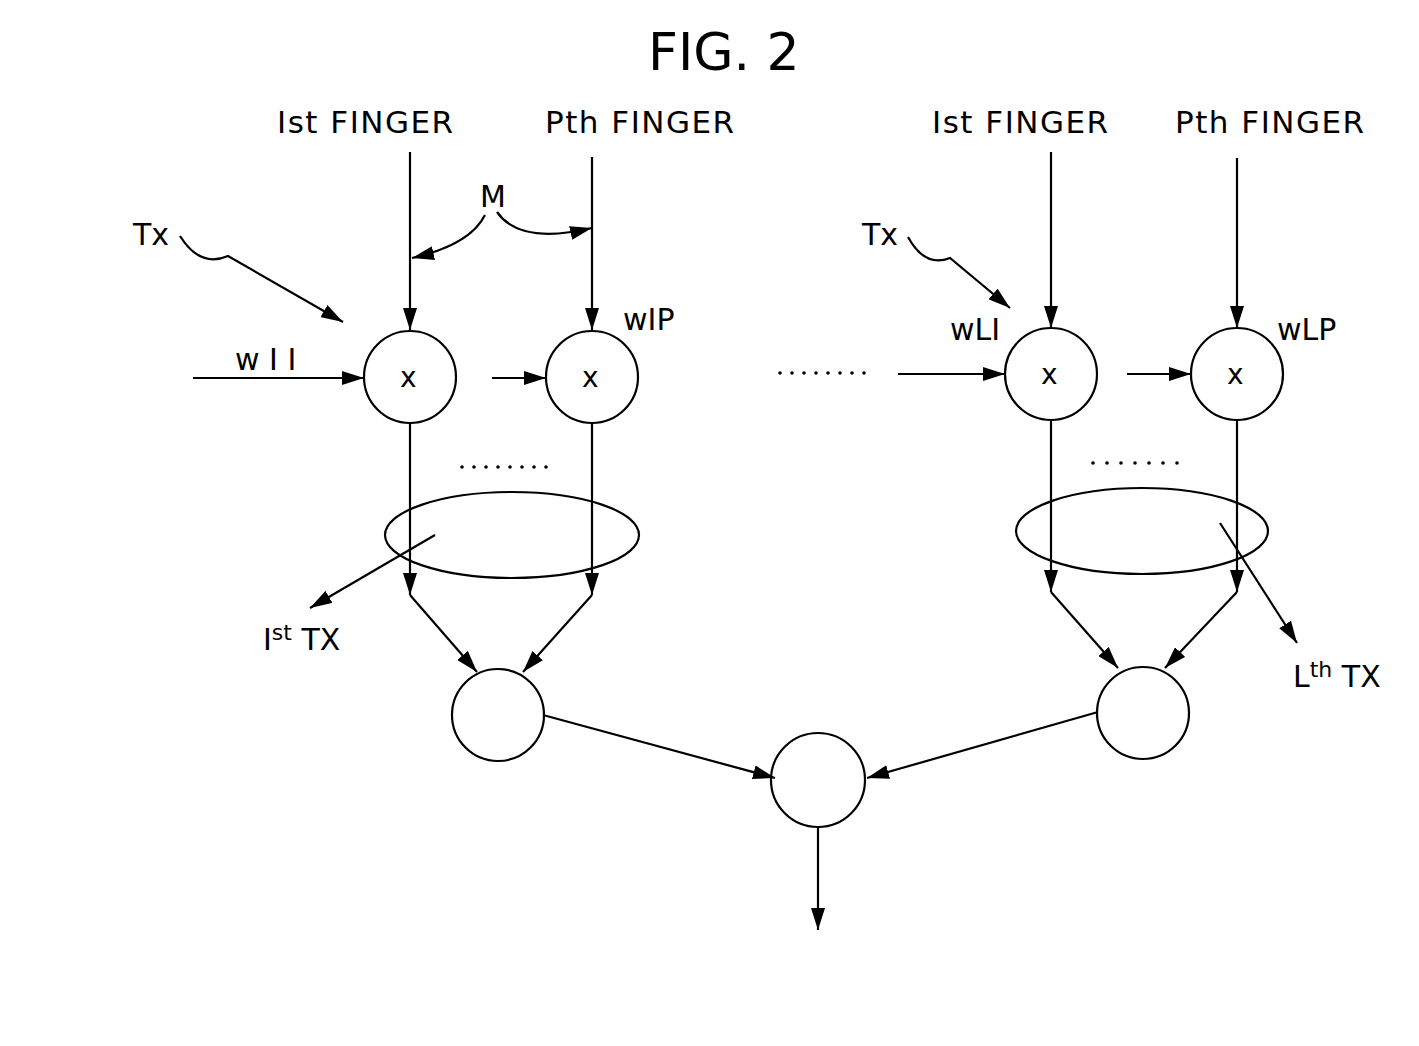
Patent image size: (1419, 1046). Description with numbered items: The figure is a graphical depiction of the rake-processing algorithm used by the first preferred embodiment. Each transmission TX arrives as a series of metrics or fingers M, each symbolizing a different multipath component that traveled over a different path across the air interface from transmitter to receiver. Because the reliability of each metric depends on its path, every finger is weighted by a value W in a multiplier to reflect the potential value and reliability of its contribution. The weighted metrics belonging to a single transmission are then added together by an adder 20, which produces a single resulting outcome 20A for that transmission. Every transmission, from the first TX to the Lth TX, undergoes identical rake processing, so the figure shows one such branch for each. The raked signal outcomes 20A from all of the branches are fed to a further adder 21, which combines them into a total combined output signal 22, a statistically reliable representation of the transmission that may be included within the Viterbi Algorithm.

The adder 20 is at (543, 693).
The resulting outcome 20A is at (693, 755).
The adder 21 is at (823, 733).
The total combined output signal 22 is at (818, 870).